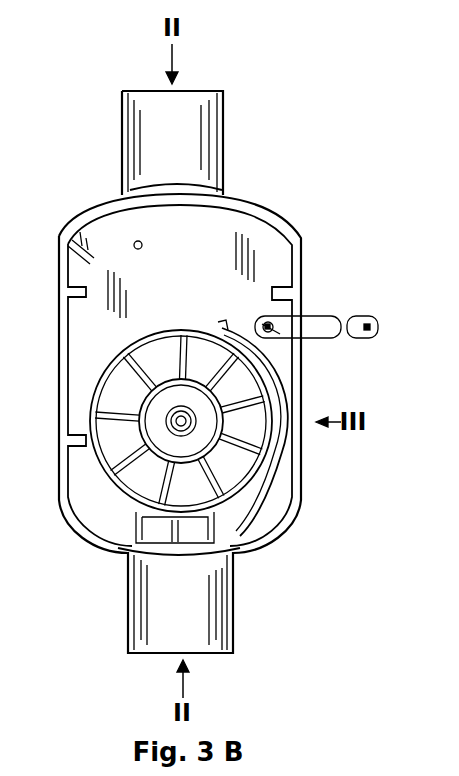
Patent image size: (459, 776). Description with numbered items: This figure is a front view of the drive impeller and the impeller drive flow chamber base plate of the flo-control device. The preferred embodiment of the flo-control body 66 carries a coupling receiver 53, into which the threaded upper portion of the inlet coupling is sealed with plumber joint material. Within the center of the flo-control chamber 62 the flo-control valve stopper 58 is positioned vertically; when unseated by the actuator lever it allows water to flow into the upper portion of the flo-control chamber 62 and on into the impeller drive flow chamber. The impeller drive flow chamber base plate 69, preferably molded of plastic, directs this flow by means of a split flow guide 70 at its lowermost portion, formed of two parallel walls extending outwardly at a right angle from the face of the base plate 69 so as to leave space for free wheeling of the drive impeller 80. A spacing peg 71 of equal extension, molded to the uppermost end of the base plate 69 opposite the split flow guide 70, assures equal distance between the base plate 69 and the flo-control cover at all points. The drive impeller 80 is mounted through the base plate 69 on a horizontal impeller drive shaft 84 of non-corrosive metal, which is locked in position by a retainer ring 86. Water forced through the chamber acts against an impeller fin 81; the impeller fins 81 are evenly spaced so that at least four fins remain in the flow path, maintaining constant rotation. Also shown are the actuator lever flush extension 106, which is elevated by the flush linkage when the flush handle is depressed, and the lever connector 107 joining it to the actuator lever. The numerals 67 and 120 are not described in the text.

The coupling receiver 53 is at (233, 655).
The flo-control valve stopper 58 is at (141, 518).
The flo-control chamber 62 is at (128, 551).
The flo-control body 66 is at (62, 499).
The gusset 67 is at (62, 247).
The impeller drive flow chamber base plate 69 is at (86, 318).
The split flow guide 70 is at (228, 532).
The spacing peg 71 is at (143, 245).
The drive impeller 80 is at (139, 421).
The impeller fin 81 is at (127, 364).
The impeller drive shaft 84 is at (181, 423).
The retainer ring 86 is at (138, 401).
The actuator lever flush extension 106 is at (320, 316).
The lever connector 107 is at (302, 345).
The inlet tube 120 is at (176, 192).